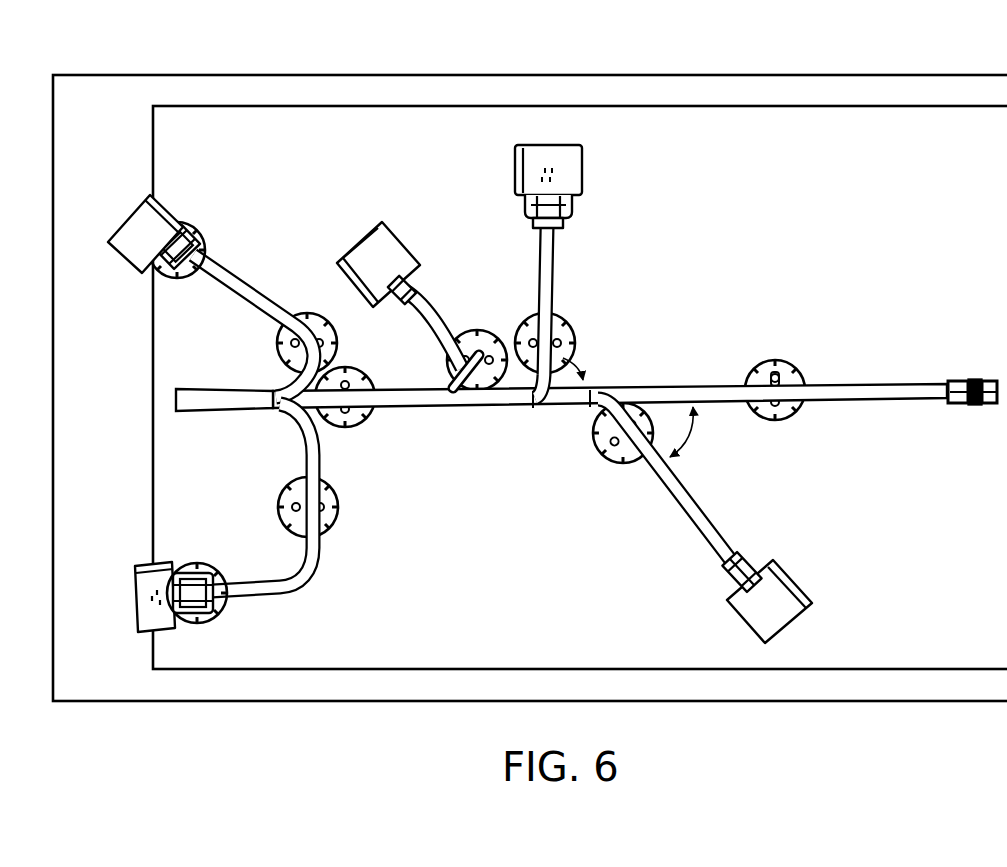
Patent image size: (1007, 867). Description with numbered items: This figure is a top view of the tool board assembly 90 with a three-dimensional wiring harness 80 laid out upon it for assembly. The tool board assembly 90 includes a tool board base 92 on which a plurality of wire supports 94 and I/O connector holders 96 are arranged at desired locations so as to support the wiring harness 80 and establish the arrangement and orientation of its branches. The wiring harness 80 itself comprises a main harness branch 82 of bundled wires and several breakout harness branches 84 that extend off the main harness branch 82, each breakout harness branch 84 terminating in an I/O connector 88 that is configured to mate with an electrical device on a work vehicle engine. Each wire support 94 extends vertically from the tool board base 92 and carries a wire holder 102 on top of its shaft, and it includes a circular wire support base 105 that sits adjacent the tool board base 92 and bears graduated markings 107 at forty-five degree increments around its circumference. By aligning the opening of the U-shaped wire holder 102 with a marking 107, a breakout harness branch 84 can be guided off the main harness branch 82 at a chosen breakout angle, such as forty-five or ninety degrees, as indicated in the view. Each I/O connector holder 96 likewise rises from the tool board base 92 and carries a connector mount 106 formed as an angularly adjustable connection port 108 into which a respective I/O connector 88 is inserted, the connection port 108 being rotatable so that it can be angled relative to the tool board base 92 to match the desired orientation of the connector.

The wiring harness 80 is at (542, 378).
The main harness branch 82 is at (893, 404).
The breakout harness branch 84 is at (248, 290).
The I/O connector 88 is at (567, 220).
The tool board assembly 90 is at (803, 140).
The tool board base 92 is at (637, 137).
The wire support 94 is at (782, 378).
The I/O connector holder 96 is at (249, 227).
The wire holder 102 is at (563, 337).
The wire support base 105 is at (340, 535).
The connector mount 106 is at (193, 211).
The graduated markings 107 is at (615, 455).
The angularly adjustable connection port 108 is at (137, 223).